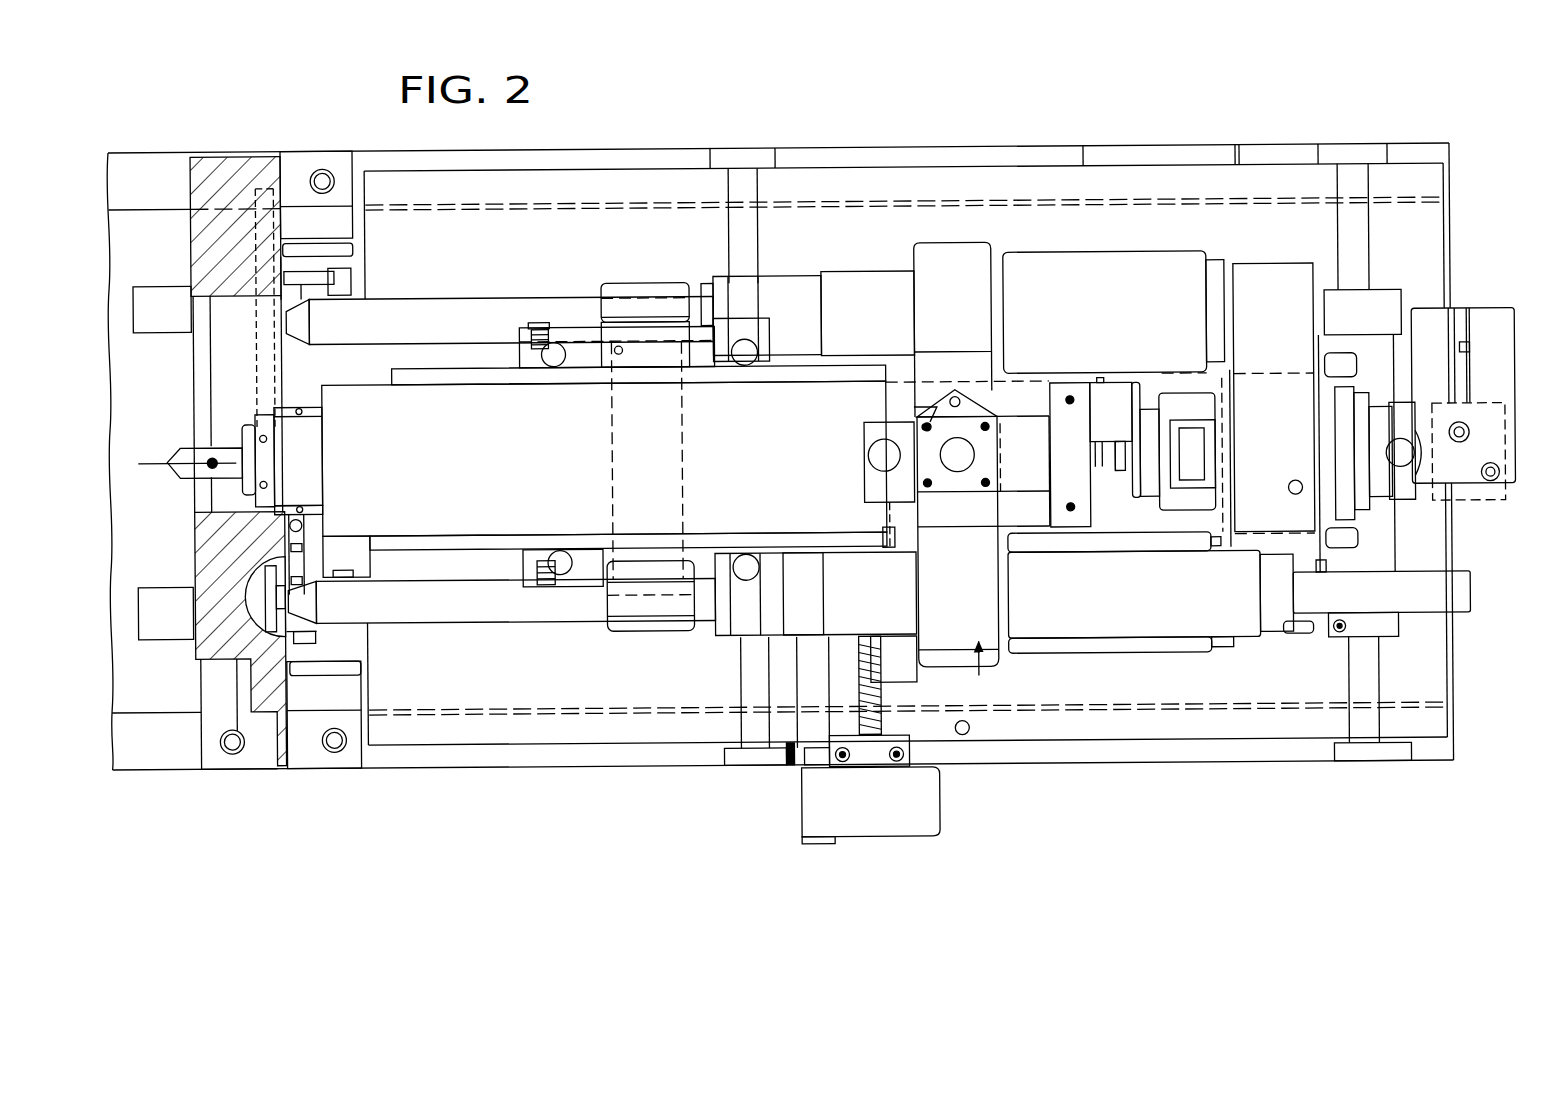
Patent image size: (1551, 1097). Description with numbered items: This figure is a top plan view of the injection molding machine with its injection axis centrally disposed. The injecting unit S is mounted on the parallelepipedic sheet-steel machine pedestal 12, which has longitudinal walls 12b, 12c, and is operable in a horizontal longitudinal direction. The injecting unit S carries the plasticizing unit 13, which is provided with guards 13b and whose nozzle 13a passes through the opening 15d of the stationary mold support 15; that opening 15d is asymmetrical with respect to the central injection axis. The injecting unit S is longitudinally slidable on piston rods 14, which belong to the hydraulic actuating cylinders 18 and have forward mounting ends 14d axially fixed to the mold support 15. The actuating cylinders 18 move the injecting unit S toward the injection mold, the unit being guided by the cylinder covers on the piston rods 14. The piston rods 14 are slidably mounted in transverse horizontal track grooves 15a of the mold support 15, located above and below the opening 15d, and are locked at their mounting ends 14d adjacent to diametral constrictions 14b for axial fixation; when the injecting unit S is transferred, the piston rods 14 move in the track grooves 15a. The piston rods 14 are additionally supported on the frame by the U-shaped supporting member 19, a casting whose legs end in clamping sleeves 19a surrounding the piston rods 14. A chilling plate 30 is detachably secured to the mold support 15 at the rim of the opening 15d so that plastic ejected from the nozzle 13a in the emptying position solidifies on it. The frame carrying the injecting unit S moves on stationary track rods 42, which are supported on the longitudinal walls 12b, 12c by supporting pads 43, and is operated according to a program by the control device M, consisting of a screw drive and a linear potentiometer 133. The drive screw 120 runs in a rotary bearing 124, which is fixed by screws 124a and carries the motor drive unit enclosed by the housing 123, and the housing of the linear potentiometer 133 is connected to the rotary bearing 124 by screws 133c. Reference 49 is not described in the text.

The machine pedestal 12 is at (155, 708).
The longitudinal side wall 12b is at (559, 758).
The longitudinal wall 12c is at (623, 171).
The plasticizing unit 13 is at (502, 384).
The nozzle 13a is at (186, 447).
The guards 13b is at (550, 475).
The piston rods 14 is at (447, 315).
The diametral constrictions 14b is at (300, 320).
The mounting ends 14d is at (297, 270).
The stationary mold support 15 is at (262, 150).
The track grooves 15a is at (288, 371).
The opening 15d is at (259, 400).
The hydraulic actuating cylinders 18 is at (1158, 603).
The supporting member 19 is at (642, 287).
The clamping sleeves 19a is at (616, 306).
The chilling plate 30 is at (308, 533).
The track rods 42 is at (748, 692).
The supporting pads 43 is at (743, 166).
The drive housing 49 is at (950, 248).
The drive screw 120 is at (949, 724).
The housing 123 is at (906, 812).
The rotary bearing 124 is at (819, 807).
The screws 124a is at (839, 765).
The linear potentiometer 133 is at (784, 760).
The screws 133c is at (814, 690).
The injecting unit S is at (857, 130).
The control device M is at (910, 848).